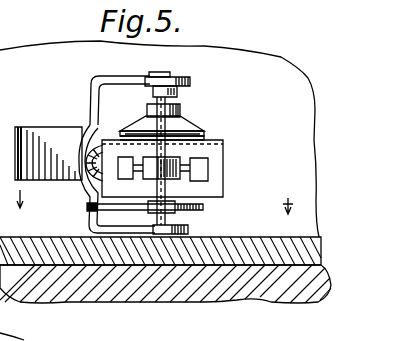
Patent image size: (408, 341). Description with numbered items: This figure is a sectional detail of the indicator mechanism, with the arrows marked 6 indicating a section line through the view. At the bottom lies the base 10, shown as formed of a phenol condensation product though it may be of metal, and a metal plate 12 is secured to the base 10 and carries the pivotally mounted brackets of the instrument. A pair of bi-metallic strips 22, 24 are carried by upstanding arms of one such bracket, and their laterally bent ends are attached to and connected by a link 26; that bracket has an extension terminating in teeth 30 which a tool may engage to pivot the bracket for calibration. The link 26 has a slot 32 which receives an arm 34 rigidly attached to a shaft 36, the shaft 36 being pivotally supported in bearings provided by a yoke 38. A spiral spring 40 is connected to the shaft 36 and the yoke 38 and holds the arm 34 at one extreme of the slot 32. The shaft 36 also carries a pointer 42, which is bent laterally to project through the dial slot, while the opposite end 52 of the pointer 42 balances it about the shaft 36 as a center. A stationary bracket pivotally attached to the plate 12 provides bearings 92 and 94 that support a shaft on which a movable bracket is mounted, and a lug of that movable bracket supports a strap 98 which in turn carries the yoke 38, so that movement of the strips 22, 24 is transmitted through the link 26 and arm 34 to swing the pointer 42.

The section line 6- 6 is at (154, 195).
The base 10 is at (256, 300).
The metal plate 12 is at (284, 250).
The bi-metallic strip 22 is at (212, 161).
The bi-metallic strip 24 is at (113, 189).
The link 26 is at (86, 206).
The teeth 30 is at (156, 222).
The slot 32 is at (180, 186).
The arm 34 is at (187, 164).
The shaft 36 is at (177, 100).
The yoke 38 is at (92, 88).
The spiral spring 40 is at (200, 208).
The pointer 42 is at (150, 121).
The opposite end of the pointer 52 is at (184, 120).
The bearing 92 is at (162, 72).
The bearing 94 is at (170, 225).
The strap 98 is at (53, 134).